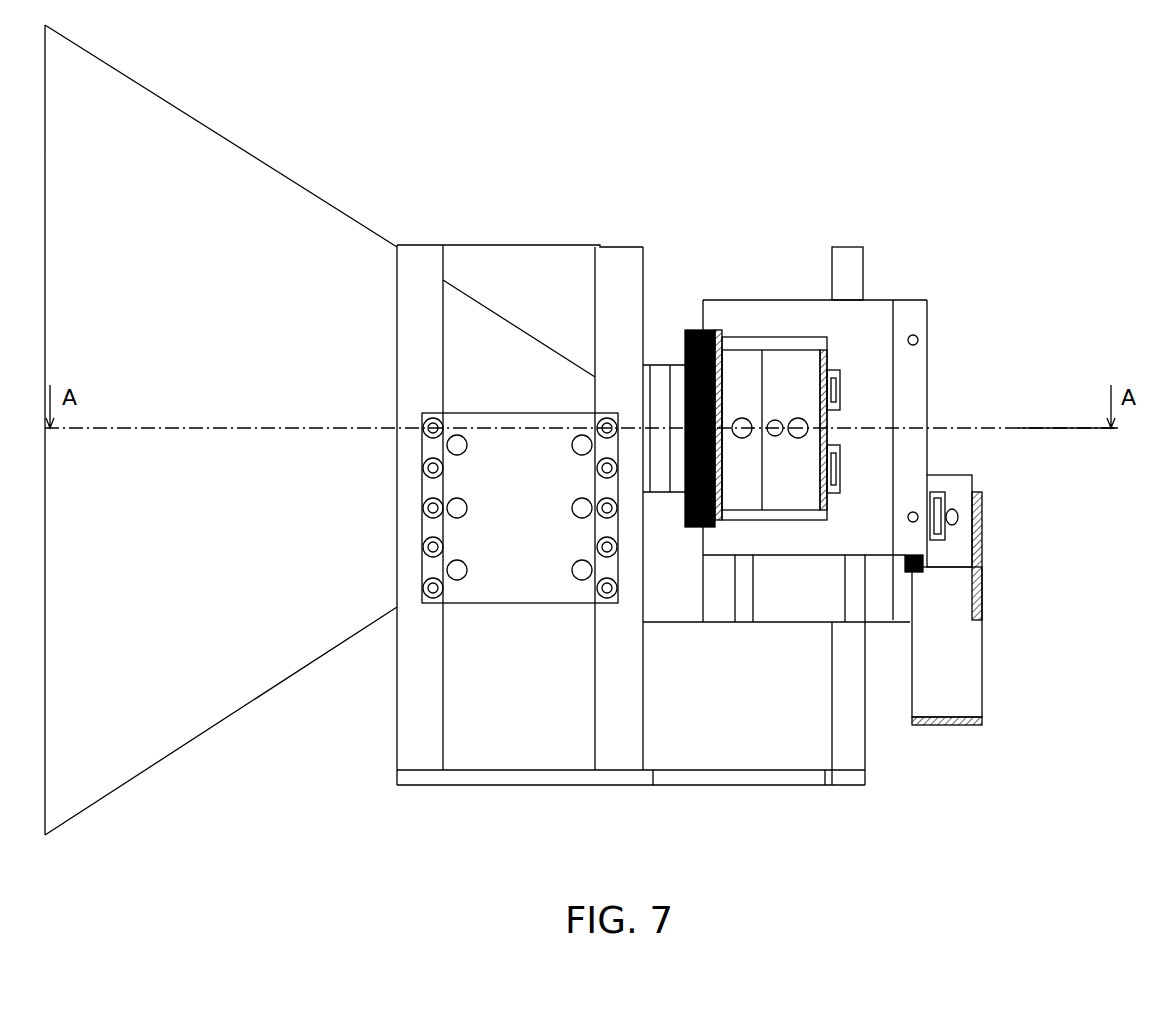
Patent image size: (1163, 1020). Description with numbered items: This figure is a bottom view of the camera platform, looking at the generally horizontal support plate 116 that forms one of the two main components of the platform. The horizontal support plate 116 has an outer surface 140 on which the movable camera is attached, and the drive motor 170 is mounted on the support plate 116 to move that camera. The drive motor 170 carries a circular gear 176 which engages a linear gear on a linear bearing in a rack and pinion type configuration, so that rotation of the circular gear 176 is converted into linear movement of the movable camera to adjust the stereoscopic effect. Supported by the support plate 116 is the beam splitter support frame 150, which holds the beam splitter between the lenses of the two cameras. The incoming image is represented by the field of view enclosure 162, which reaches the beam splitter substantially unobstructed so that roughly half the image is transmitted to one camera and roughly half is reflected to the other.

The field of view 162 is at (200, 707).
The beam splitter support frame 150 is at (421, 724).
The outer surface 140 is at (740, 757).
The horizontal support plate 116 is at (795, 747).
The circular gear 176 is at (920, 570).
The drive motor 170 is at (968, 646).